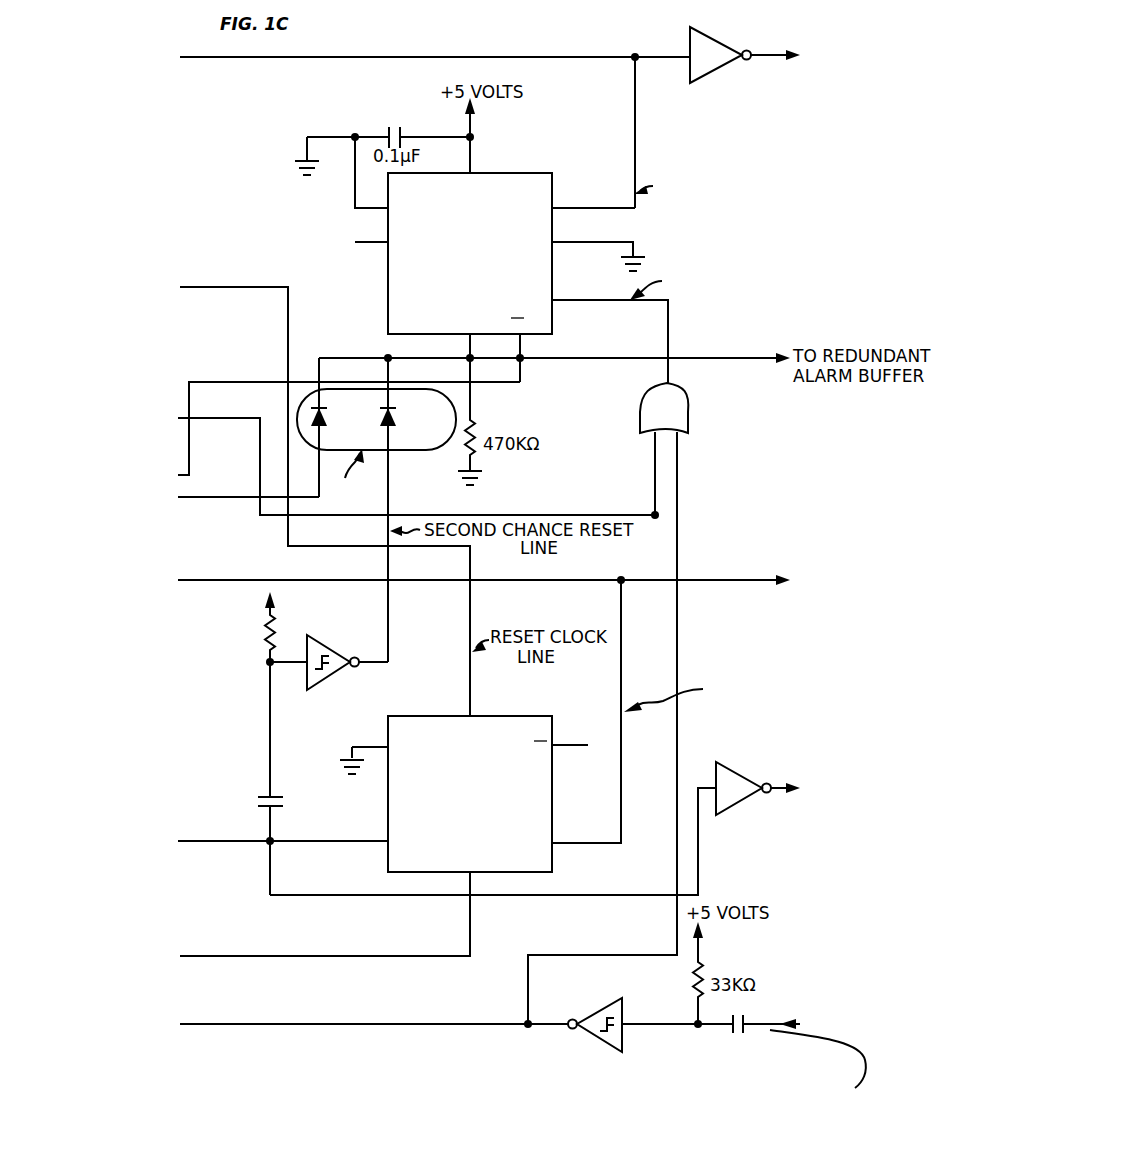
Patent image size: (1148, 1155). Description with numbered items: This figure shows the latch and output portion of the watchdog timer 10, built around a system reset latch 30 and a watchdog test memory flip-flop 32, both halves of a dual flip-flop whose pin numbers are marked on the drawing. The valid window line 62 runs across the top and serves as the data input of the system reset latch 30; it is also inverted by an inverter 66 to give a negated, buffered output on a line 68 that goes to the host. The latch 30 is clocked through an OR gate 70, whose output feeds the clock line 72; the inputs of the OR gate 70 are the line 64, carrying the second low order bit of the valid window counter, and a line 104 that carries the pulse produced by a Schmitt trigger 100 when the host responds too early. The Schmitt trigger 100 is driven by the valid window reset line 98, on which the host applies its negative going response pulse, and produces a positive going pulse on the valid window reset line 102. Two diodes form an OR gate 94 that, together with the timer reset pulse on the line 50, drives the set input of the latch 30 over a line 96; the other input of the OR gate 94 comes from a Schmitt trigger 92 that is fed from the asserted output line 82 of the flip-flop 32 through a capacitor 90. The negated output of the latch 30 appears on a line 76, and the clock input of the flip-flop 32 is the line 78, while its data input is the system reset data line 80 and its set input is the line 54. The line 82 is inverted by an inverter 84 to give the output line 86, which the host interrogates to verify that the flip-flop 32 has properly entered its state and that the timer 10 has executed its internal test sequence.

The watchdog timer 10 is at (590, 40).
The system reset latch 30 is at (596, 196).
The watchdog test memory flip-flop 32 is at (483, 775).
The line 50 is at (247, 500).
The line 54 is at (215, 956).
The valid window line 62 is at (228, 57).
The line 64 is at (210, 418).
The inverter 66 is at (713, 39).
The line 68 is at (766, 53).
The OR gate 70 is at (645, 416).
The clock line 72 is at (668, 330).
The line 76 is at (189, 447).
The line 78 is at (237, 288).
The system reset data line 80 is at (245, 579).
The asserted output line 82 is at (230, 841).
The inverter 84 is at (726, 775).
The output line 86 is at (773, 793).
The capacitor 90 is at (270, 791).
The Schmitt trigger 92 is at (326, 683).
The OR gate 94 is at (378, 418).
The line 96 is at (472, 345).
The valid window reset line 98 is at (768, 1027).
The Schmitt trigger 100 is at (600, 1006).
The valid window reset line 102 is at (437, 1024).
The line 104 is at (677, 912).